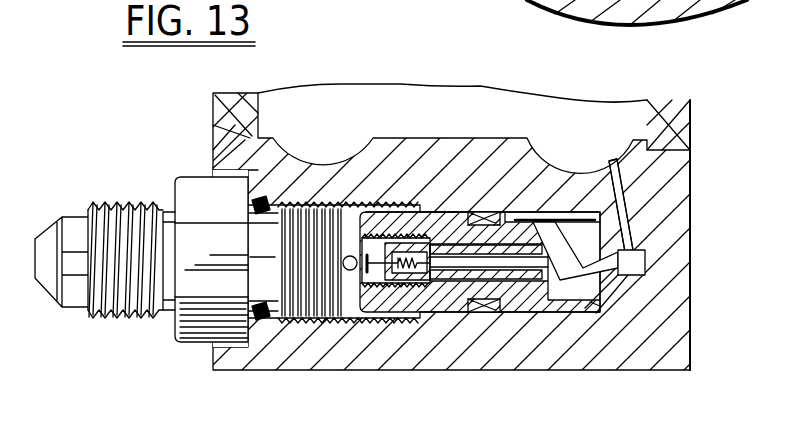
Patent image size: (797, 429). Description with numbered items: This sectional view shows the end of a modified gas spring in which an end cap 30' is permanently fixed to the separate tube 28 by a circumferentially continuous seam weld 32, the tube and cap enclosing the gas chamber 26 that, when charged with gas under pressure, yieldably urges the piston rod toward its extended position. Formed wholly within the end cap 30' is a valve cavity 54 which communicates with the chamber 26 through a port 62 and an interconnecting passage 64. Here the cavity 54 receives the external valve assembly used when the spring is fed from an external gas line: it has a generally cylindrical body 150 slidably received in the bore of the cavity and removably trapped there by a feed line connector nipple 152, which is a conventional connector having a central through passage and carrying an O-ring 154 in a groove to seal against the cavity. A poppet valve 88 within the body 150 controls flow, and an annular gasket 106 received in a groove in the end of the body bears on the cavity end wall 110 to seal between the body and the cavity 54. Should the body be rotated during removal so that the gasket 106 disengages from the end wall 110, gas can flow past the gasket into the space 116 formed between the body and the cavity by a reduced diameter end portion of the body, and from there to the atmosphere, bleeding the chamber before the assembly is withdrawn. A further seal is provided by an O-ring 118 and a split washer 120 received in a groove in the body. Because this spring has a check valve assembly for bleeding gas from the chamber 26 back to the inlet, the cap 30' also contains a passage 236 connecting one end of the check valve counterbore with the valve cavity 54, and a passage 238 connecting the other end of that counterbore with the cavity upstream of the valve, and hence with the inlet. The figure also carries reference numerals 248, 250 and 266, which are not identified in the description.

The gas chamber 26 is at (511, 104).
The tube 28 is at (692, 107).
The end cap 30' is at (485, 231).
The seam weld 32 is at (692, 137).
The valve cavity 54 is at (340, 318).
The port 62 is at (645, 258).
The interconnecting passage 64 is at (625, 203).
The poppet valve 88 is at (403, 284).
The annular gasket 106 is at (610, 293).
The cavity end wall 110 is at (583, 306).
The space 116 is at (533, 212).
The O-ring 118 is at (488, 312).
The split washer 120 is at (497, 312).
The cylindrical body 150 is at (443, 215).
The feed line connector nipple 152 is at (173, 340).
The O-ring 154 is at (252, 354).
The passage 236 is at (573, 228).
The passage 238 is at (352, 255).
The element 248 is at (665, 415).
The element 250 is at (743, 413).
The element 266 is at (600, 417).